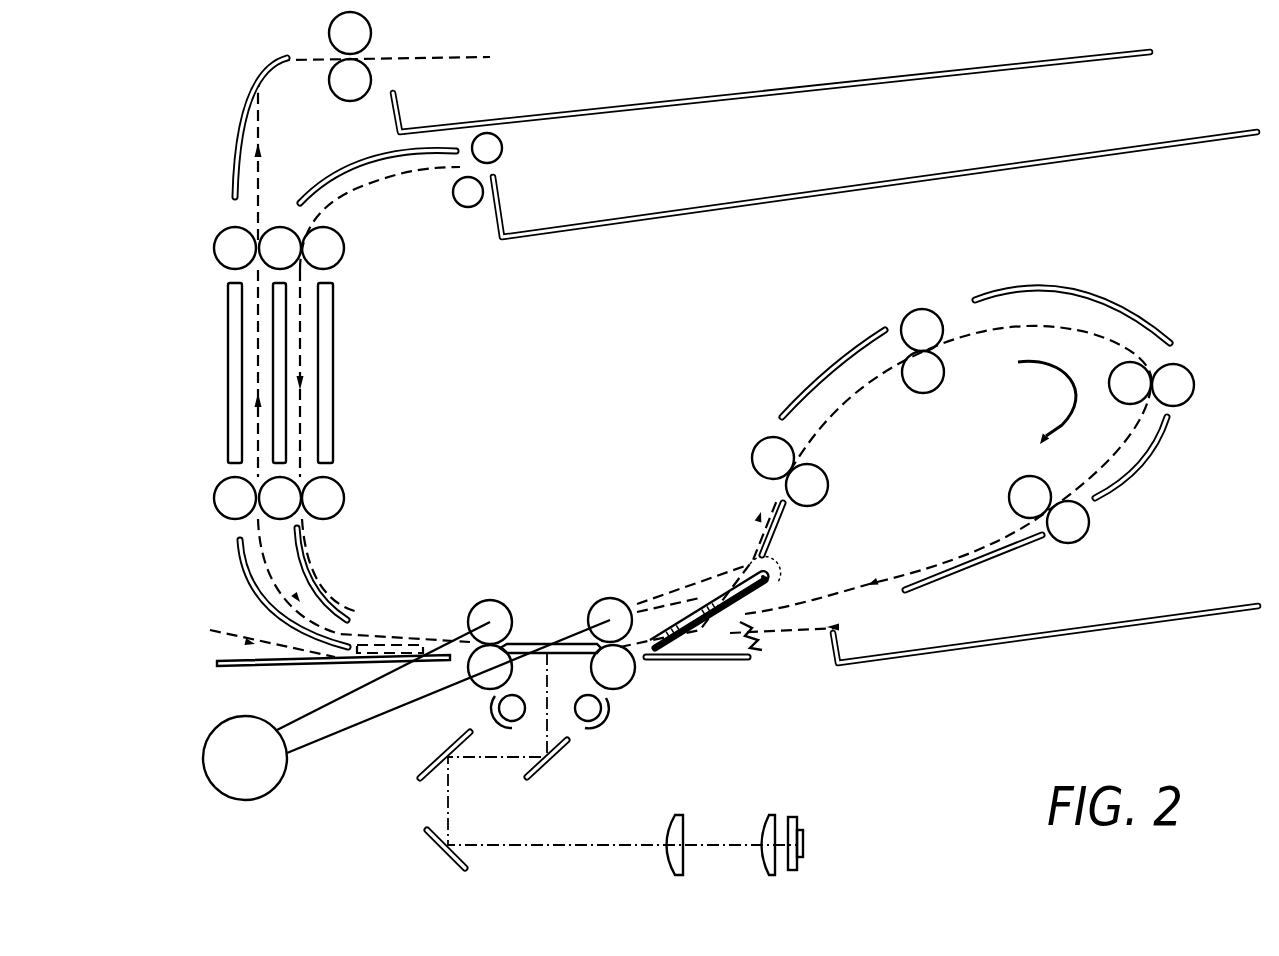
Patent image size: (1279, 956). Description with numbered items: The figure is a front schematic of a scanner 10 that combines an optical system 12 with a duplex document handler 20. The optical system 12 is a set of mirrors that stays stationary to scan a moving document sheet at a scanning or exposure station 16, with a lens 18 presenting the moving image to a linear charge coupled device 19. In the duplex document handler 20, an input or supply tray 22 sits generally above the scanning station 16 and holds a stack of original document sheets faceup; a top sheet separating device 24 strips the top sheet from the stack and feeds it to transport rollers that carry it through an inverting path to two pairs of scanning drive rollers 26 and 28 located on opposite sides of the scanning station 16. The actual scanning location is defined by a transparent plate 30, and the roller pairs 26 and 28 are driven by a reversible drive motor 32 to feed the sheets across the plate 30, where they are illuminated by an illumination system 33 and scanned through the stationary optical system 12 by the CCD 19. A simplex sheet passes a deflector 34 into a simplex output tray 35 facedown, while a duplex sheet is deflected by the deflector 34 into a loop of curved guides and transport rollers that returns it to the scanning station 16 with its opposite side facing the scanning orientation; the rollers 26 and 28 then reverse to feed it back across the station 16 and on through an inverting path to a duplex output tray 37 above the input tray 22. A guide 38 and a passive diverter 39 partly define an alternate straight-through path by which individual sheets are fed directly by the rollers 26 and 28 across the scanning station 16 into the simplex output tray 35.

The scanner 10 is at (100, 73).
The optical system 12 is at (340, 843).
The scanning station 16 is at (549, 600).
The lens 18 is at (728, 789).
The linear charge coupled device 19 is at (801, 833).
The duplex document handler 20 is at (150, 342).
The input or supply tray 22 is at (568, 215).
The top sheet separating device 24 is at (504, 148).
The scanning drive rollers 26 is at (497, 607).
The scanning drive rollers 28 is at (607, 603).
The transparent plate 30 is at (569, 653).
The reversible drive motor 32 is at (203, 748).
The illumination system 33 is at (522, 713).
The deflector 34 is at (700, 617).
The simplex output tray 35 is at (993, 623).
The duplex output tray 37 is at (672, 69).
The guide 38 is at (222, 667).
The passive diverter 39 is at (405, 643).